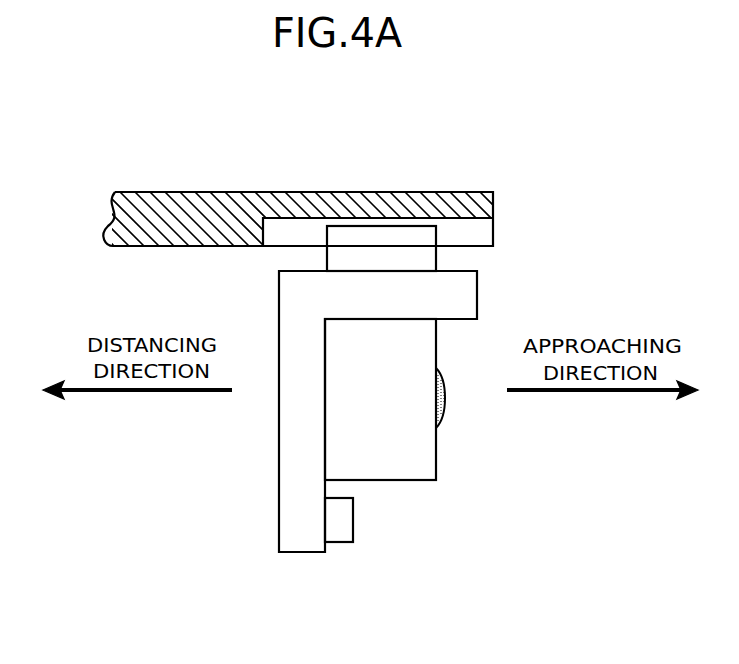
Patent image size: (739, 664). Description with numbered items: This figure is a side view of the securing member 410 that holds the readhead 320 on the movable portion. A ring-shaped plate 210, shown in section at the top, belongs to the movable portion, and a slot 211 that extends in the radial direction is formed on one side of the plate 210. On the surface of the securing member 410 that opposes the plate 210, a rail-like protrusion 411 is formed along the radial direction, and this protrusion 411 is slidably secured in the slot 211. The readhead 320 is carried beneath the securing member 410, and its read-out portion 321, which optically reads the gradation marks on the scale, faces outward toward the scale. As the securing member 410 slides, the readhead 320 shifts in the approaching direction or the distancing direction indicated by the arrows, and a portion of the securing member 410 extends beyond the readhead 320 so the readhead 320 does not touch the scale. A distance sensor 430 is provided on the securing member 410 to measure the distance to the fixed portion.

The plate 210 is at (215, 192).
The slot 211 is at (490, 192).
The protrusion 411 is at (437, 252).
The securing member 410 is at (305, 552).
The readhead 320 is at (425, 480).
The read-out portion 321 is at (446, 402).
The distance sensor 430 is at (343, 542).